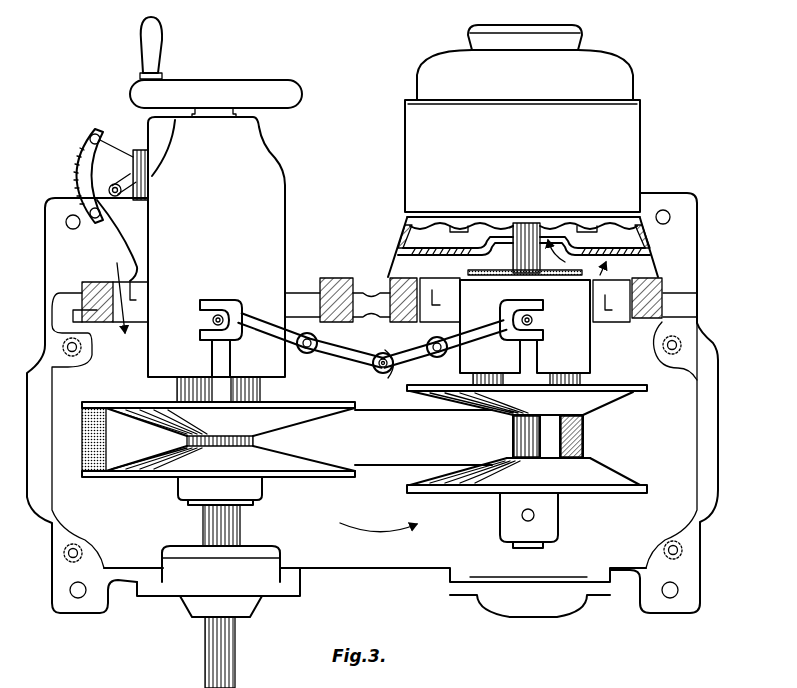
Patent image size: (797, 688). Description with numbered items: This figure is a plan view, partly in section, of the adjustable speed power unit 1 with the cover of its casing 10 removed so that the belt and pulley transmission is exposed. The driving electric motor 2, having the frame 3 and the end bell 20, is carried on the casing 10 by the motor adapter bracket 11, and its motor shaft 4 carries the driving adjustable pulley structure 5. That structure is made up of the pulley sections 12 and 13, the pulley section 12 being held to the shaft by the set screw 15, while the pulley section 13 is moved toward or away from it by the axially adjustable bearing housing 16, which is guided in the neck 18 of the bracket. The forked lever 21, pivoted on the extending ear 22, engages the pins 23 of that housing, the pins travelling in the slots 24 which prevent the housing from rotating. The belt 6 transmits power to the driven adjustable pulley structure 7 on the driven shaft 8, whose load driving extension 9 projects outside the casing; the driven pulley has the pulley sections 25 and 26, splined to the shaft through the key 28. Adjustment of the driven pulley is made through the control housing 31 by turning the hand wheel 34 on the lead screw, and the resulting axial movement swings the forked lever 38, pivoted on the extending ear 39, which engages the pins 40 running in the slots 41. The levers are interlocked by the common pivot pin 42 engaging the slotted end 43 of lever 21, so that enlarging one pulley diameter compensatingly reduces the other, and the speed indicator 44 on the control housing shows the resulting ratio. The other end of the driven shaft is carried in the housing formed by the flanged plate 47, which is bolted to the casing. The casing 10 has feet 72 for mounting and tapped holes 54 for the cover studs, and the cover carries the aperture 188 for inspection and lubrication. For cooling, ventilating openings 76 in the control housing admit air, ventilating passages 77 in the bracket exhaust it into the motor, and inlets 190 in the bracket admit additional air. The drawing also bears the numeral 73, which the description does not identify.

The adjustable speed power unit 1 is at (383, 576).
The driving electric motor 2 is at (528, 150).
The frame 3 is at (640, 140).
The motor shaft 4 is at (541, 236).
The adjustable pulley structure 5 is at (623, 447).
The belt 6 is at (380, 470).
The adjustable pulley structure 7 is at (85, 440).
The driven shaft 8 is at (203, 525).
The load driving extension 9 is at (237, 641).
The casing 10 is at (701, 528).
The motor adapter bracket 11 is at (652, 248).
The pulley section 12 is at (615, 484).
The pulley section 13 is at (625, 392).
The set screw 15 is at (534, 515).
The axially adjustable bearing housing 16 is at (585, 379).
The neck 18 is at (592, 349).
The end bell 20 is at (630, 68).
The forked lever 21 is at (478, 305).
The extending ear 22 is at (447, 352).
The pins 23 is at (544, 316).
The slots 24 is at (538, 350).
The pulley section 25 is at (110, 477).
The pulley section 26 is at (105, 402).
The key 28 is at (242, 525).
The control housing 31 is at (285, 213).
The hand wheel 34 is at (302, 100).
The forked lever 38 is at (272, 344).
The extending ear 39 is at (306, 356).
The pins 40 is at (204, 320).
The slots 41 is at (212, 356).
The common pivot pin 42 is at (374, 368).
The slotted end 43 is at (388, 353).
The speed indicator 44 is at (73, 162).
The flanged plate 47 is at (283, 597).
The tapped holes 54 is at (73, 558).
The feet 72 is at (45, 240).
The bottom pan 73 is at (568, 612).
The ventilating openings 76 is at (303, 300).
The ventilating passages 77 is at (440, 300).
The aperture 188 is at (383, 374).
The inlets 190 is at (634, 258).